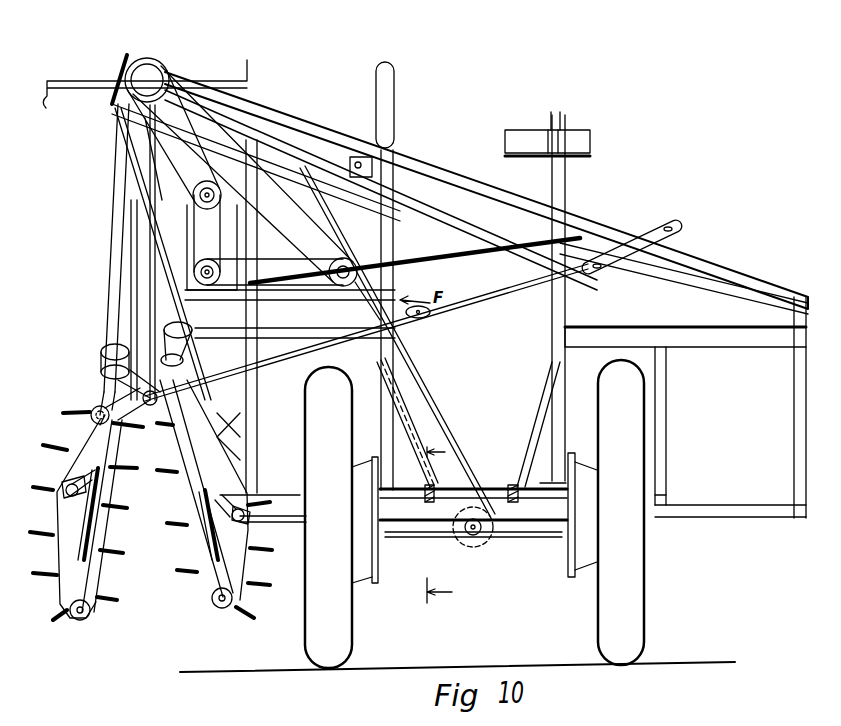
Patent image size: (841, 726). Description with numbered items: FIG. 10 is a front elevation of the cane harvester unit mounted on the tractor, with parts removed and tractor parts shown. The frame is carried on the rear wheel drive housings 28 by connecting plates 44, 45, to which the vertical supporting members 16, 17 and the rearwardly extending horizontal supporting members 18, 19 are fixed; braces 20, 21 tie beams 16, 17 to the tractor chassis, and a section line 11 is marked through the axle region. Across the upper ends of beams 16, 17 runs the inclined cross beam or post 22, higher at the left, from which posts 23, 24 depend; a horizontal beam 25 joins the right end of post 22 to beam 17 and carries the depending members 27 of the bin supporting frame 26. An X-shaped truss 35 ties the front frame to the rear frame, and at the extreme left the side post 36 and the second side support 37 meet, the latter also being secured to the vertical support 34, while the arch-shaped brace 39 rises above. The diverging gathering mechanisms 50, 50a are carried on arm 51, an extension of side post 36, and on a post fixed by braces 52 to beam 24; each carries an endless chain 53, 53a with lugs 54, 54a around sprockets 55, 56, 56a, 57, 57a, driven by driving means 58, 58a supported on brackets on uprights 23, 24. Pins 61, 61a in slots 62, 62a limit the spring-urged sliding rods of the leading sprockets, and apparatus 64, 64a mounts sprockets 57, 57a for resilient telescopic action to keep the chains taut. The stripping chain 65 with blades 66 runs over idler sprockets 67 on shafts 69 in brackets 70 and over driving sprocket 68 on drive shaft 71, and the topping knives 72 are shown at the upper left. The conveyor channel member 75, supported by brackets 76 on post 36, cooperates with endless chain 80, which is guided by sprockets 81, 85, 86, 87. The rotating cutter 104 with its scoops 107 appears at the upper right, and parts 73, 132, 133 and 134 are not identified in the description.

The section line 11- 11 is at (440, 519).
The vertical supporting member 16 is at (395, 343).
The vertical supporting member 17 is at (551, 341).
The horizontal supporting member 18 is at (390, 512).
The horizontal supporting member 19 is at (565, 508).
The brace 20 is at (403, 410).
The brace 21 is at (540, 410).
The cross beam or post 22 is at (455, 232).
The post 23 is at (120, 277).
The post 24 is at (252, 262).
The horizontal beam 25 is at (716, 334).
The bin supporting frame 26 is at (668, 498).
The members of bin supporting frame 27 is at (668, 452).
The rear wheel drive housings 28 is at (395, 550).
The vertical support 34 is at (165, 188).
The X-shaped truss 35 is at (300, 132).
The side post 36 is at (150, 325).
The second side support 37 is at (175, 183).
The brace 39 is at (395, 96).
The connecting plate 44 is at (380, 570).
The connecting plate 45 is at (568, 565).
The gathering mechanism 50 is at (112, 456).
The gathering mechanism 50a is at (200, 478).
The arm or post 51 is at (100, 484).
The braces 52 is at (222, 420).
The endless chain 53 is at (60, 590).
The endless chain 53a is at (245, 572).
The projections or lugs 54 is at (44, 500).
The projections or lugs 54a is at (195, 578).
The sprocket 55 is at (94, 428).
The idler sprocket 56 is at (84, 620).
The idler sprocket 56a is at (233, 598).
The idler sprocket 57 is at (72, 498).
The idler sprocket 57a is at (252, 516).
The driving means 58 is at (101, 372).
The driving means 58a is at (183, 362).
The pin 61 is at (100, 524).
The pin 61a is at (216, 530).
The slot 62 is at (92, 545).
The slot 62a is at (205, 542).
The apparatus 64 is at (80, 478).
The apparatus 64a is at (225, 499).
The endless chain or belt 65 is at (328, 232).
The rigid elements or blades 66 is at (325, 188).
The idler sprockets 67 is at (210, 182).
The driving sprocket 68 is at (367, 301).
The shafts 69 is at (210, 260).
The brackets 70 is at (256, 250).
The drive shaft 71 is at (360, 272).
The knives 72 is at (247, 72).
The top pulley 73 is at (155, 62).
The channel member 75 is at (460, 252).
The brackets 76 is at (172, 278).
The endless chain 80 is at (480, 302).
The sprocket 81 is at (139, 391).
The sprocket 85 is at (690, 224).
The sprocket 86 is at (604, 272).
The sprocket 87 is at (430, 314).
The rotating cutter 104 is at (580, 157).
The arms or scoops 107 is at (588, 140).
The bracket 132 is at (320, 220).
The bracket 133 is at (258, 328).
The post lower end 134 is at (100, 232).